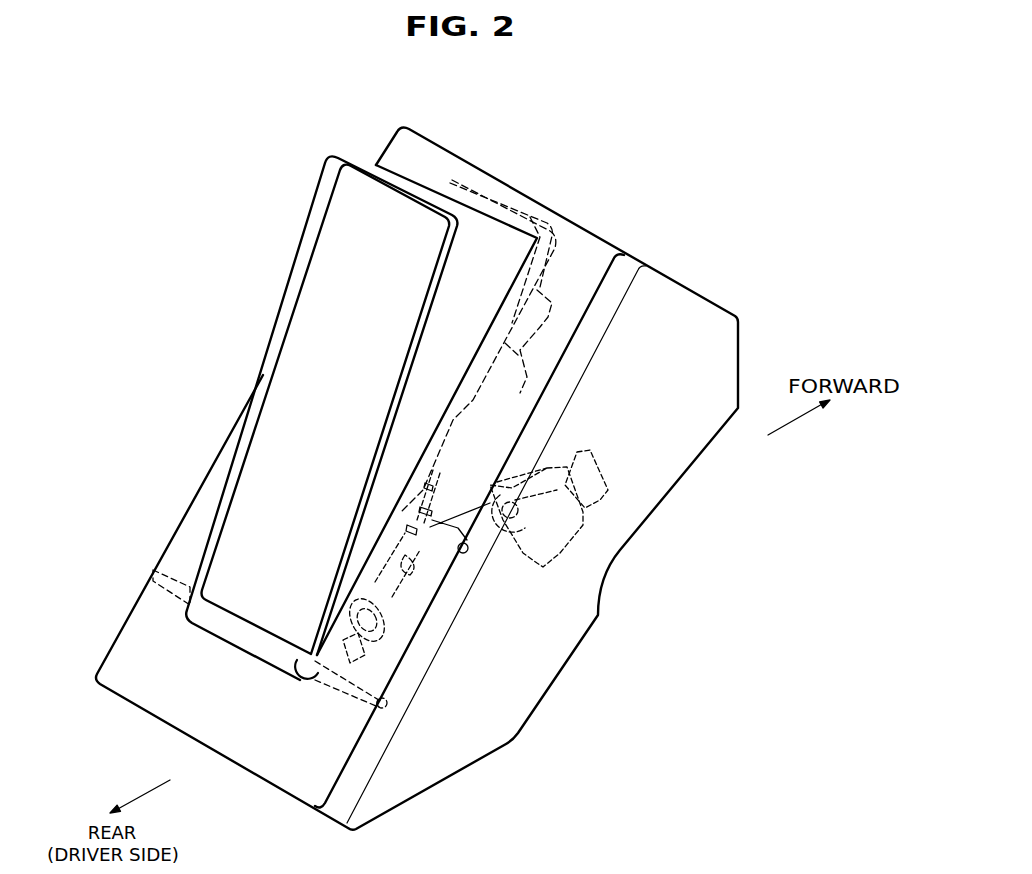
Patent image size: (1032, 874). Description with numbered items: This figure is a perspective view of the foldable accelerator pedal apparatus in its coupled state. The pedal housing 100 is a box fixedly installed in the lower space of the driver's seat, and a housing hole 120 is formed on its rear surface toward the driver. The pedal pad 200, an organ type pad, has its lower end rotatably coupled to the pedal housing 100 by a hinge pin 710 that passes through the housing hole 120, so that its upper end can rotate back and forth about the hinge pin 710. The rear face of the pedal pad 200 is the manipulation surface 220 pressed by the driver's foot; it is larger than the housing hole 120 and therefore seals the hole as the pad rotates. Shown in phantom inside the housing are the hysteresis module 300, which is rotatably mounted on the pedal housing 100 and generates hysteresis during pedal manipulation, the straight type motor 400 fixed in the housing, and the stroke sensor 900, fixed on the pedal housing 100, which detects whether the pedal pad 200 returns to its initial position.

The pedal housing 100 is at (658, 478).
The housing hole 120 is at (508, 293).
The pedal pad 200 is at (284, 255).
The manipulation surface 220 is at (313, 318).
The hysteresis module 300 is at (390, 567).
The straight type motor 400 is at (543, 343).
The hinge pin 710 is at (160, 575).
The stroke sensor 900 is at (565, 533).